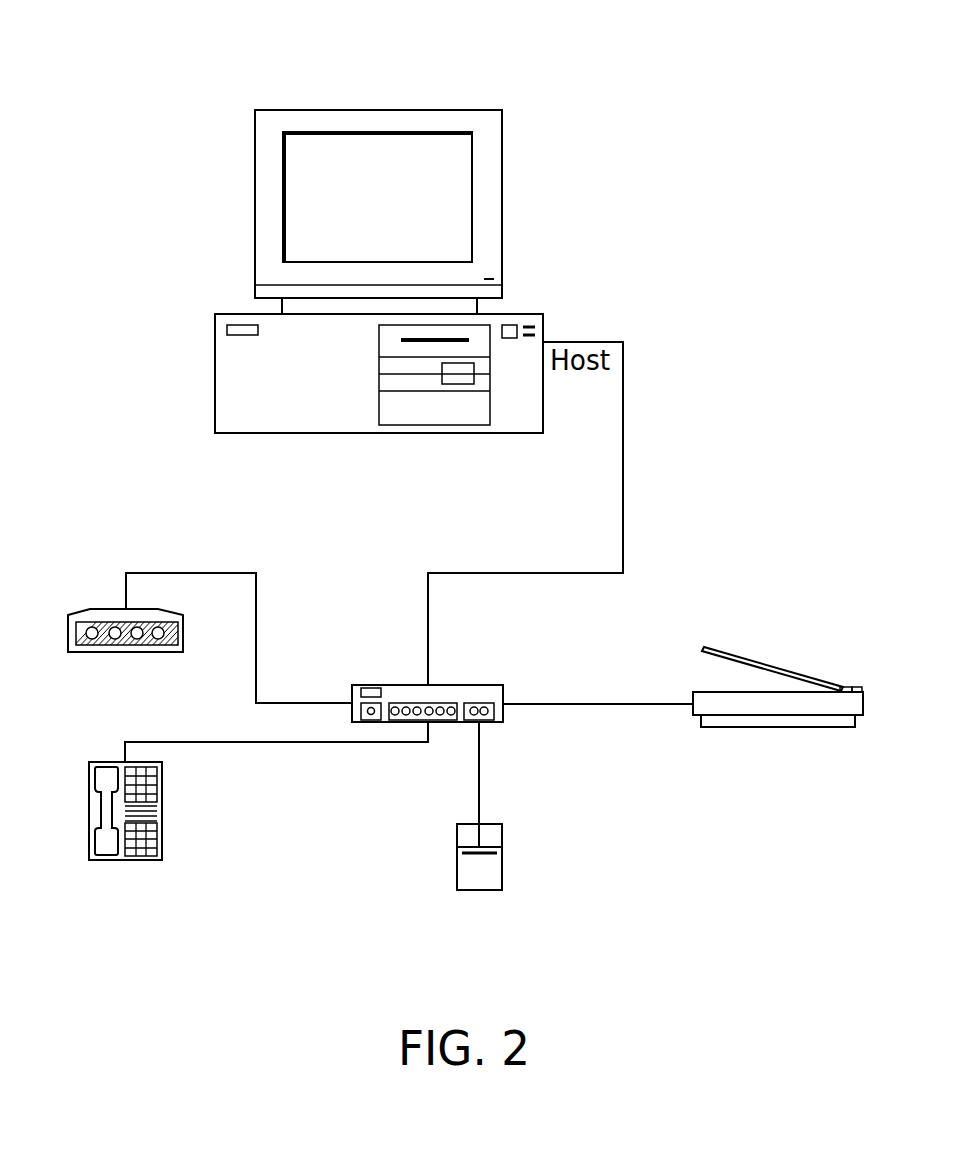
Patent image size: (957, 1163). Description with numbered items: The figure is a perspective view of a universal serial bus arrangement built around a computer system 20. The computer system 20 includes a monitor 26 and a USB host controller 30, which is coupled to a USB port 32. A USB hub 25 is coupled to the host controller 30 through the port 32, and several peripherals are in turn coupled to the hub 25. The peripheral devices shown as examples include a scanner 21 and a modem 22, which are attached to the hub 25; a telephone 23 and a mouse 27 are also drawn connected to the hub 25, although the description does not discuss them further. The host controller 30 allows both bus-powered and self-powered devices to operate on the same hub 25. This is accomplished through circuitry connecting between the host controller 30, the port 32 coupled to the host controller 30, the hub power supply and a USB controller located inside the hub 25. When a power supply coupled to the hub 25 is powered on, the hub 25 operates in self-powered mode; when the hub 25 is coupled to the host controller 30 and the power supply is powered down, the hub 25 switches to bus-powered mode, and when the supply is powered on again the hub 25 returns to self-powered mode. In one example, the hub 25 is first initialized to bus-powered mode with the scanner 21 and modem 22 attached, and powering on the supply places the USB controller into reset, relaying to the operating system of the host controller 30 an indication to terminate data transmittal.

The computer system 20 is at (426, 70).
The scanner 21 is at (767, 665).
The modem 22 is at (110, 608).
The telephone 23 is at (88, 803).
The USB hub 25 is at (466, 685).
The monitor 26 is at (254, 178).
The mouse 27 is at (503, 858).
The USB host controller 30 is at (543, 314).
The USB port 32 is at (527, 325).